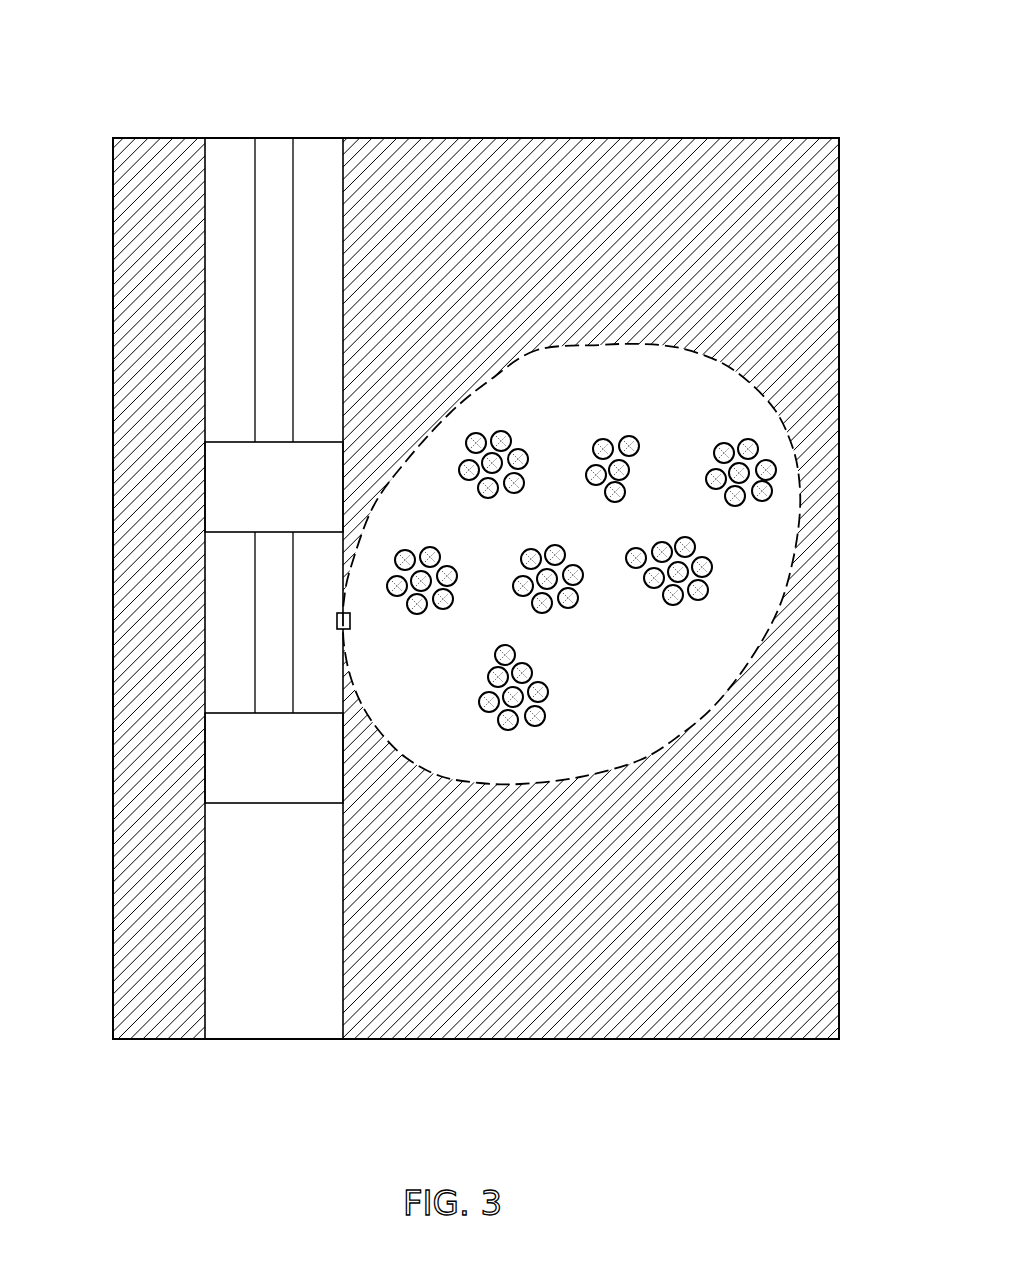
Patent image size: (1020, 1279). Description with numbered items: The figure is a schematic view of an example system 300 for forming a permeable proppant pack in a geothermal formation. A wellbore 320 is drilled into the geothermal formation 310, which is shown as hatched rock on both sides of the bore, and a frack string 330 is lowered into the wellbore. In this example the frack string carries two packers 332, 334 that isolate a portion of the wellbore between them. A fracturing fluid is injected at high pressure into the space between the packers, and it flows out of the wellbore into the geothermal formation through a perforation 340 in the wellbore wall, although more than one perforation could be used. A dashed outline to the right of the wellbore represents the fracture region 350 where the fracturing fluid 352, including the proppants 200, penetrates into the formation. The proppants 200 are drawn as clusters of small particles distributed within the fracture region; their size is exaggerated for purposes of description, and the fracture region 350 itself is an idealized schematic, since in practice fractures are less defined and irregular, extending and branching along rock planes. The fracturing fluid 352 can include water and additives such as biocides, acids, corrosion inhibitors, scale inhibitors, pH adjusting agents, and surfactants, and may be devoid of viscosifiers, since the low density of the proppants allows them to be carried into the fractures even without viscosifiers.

The system 300 is at (190, 49).
The geothermal formation 310 is at (529, 153).
The wellbore 320 is at (314, 153).
The frack string 330 is at (268, 407).
The packer 332 is at (218, 490).
The packer 334 is at (220, 760).
The perforation 340 is at (337, 622).
The proppants 200 is at (770, 490).
The fracture region 350 is at (787, 582).
The fracturing fluid 352 is at (685, 652).